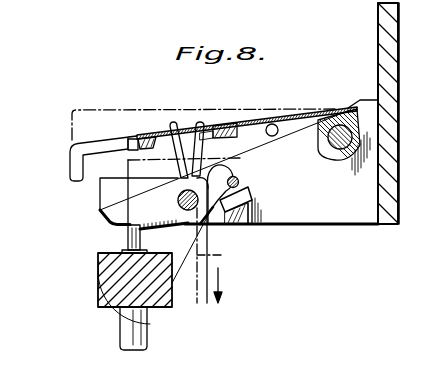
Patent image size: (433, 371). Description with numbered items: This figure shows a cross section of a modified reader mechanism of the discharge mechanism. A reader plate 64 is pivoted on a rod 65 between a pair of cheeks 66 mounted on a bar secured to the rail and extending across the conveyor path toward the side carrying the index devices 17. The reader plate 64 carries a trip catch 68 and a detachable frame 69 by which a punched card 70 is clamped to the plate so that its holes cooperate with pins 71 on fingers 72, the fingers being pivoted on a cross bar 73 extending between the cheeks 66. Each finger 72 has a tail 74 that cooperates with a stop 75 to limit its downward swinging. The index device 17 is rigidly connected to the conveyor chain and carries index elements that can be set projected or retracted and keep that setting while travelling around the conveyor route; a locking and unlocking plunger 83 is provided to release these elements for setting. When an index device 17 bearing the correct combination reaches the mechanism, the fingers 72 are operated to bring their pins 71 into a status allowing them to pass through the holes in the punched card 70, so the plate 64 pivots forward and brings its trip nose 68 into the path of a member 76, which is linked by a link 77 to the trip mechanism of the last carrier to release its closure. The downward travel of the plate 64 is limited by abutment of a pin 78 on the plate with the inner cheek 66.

The index device 17 is at (117, 287).
The reader plate 64 is at (253, 123).
The rod 65 is at (336, 158).
The cheeks 66 is at (323, 208).
The trip catch 68 is at (77, 167).
The detachable frame 69 is at (225, 126).
The punched card 70 is at (163, 133).
The pins 71 is at (175, 122).
The fingers 72 is at (108, 233).
The cross bar 73 is at (213, 212).
The tail 74 is at (253, 195).
The stop 75 is at (239, 178).
The member 76 is at (221, 258).
The link 77 is at (203, 303).
The pin 78 is at (278, 134).
The locking and unlocking plunger 83 is at (148, 342).